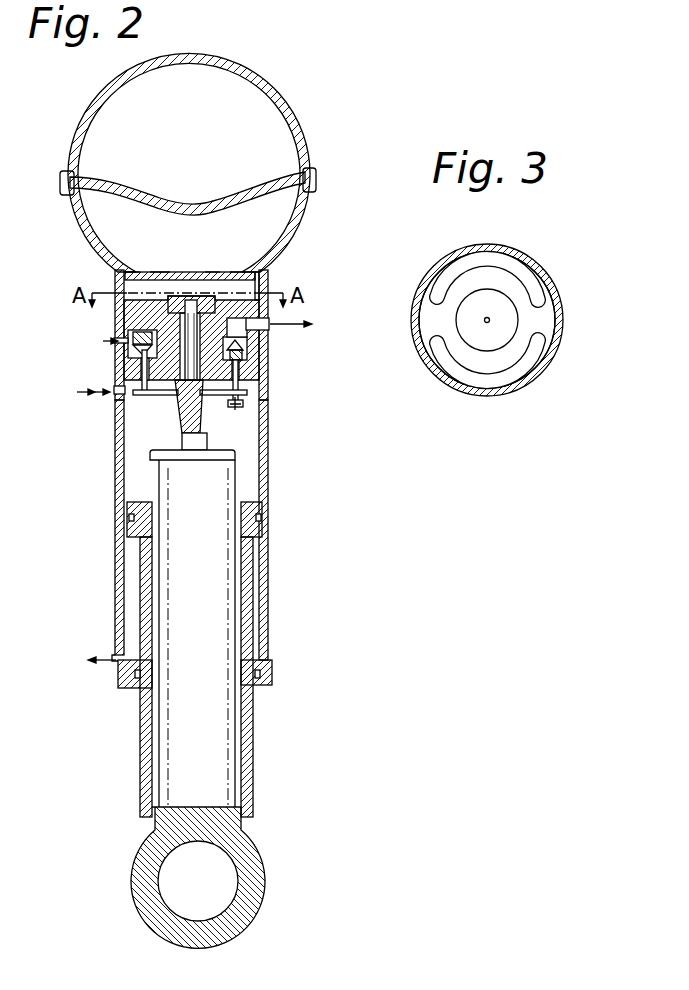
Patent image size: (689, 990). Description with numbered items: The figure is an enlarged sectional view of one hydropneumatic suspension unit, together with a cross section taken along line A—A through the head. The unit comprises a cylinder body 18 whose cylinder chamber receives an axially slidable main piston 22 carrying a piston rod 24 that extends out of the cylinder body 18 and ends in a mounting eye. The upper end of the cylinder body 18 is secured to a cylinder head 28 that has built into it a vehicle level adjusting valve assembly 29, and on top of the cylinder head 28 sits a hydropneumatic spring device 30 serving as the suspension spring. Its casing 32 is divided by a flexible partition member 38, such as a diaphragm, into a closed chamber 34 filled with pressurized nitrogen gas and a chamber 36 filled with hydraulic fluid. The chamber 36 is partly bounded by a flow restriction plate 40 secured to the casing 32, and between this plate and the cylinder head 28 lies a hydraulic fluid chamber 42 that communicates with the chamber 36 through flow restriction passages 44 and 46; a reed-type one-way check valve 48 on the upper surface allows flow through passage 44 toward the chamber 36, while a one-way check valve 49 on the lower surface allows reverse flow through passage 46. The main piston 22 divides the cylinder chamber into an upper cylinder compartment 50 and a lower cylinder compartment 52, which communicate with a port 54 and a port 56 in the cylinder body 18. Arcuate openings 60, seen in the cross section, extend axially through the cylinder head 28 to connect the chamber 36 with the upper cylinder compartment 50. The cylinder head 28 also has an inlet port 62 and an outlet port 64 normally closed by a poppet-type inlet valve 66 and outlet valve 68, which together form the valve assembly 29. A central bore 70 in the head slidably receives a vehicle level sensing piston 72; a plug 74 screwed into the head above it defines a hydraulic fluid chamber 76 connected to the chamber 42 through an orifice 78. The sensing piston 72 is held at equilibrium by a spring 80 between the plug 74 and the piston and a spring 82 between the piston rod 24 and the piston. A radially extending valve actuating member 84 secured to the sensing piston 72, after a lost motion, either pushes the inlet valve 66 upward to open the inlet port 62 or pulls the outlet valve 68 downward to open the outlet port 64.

In FIG. 2, the cylinder body 18 is at (270, 452).
In FIG. 2, the main piston 22 is at (252, 510).
In FIG. 2, the piston rod 24 is at (246, 595).
In FIG. 2, the cylinder head 28 is at (268, 310).
In FIG. 3, the cylinder head 28 is at (562, 330).
In FIG. 2, the vehicle level adjusting valve assembly 29 is at (270, 365).
In FIG. 2, the hydropneumatic spring device 30 is at (308, 146).
In FIG. 2, the casing 32 is at (252, 80).
In FIG. 2, the gas chamber 34 is at (190, 134).
In FIG. 2, the hydraulic fluid chamber 36 is at (140, 226).
In FIG. 2, the flexible partition member 38 is at (212, 197).
In FIG. 2, the flow restriction plate 40 is at (212, 272).
In FIG. 2, the hydraulic fluid chamber 42 is at (120, 285).
In FIG. 2, the flow restriction passage 44 is at (160, 272).
In FIG. 2, the flow restriction passage 46 is at (238, 272).
In FIG. 2, the one-way check valve 48 is at (128, 272).
In FIG. 2, the one-way check valve 49 is at (262, 285).
In FIG. 2, the upper cylinder compartment 50 is at (162, 432).
In FIG. 2, the lower cylinder compartment 52 is at (133, 565).
In FIG. 2, the port 54 is at (117, 395).
In FIG. 2, the port 56 is at (118, 668).
In FIG. 3, the arcuate openings 60 is at (520, 278).
In FIG. 2, the inlet port 62 is at (128, 343).
In FIG. 2, the outlet port 64 is at (268, 340).
In FIG. 2, the inlet valve 66 is at (133, 358).
In FIG. 2, the outlet valve 68 is at (268, 357).
In FIG. 2, the central bore 70 is at (228, 383).
In FIG. 2, the vehicle level sensing piston 72 is at (204, 418).
In FIG. 2, the plug 74 is at (128, 305).
In FIG. 3, the plug 74 is at (445, 322).
In FIG. 2, the hydraulic fluid chamber 76 is at (124, 328).
In FIG. 2, the orifice 78 is at (196, 300).
In FIG. 3, the orifice 78 is at (490, 320).
In FIG. 2, the spring 80 is at (180, 296).
In FIG. 2, the spring 82 is at (235, 485).
In FIG. 2, the valve actuating member 84 is at (250, 404).